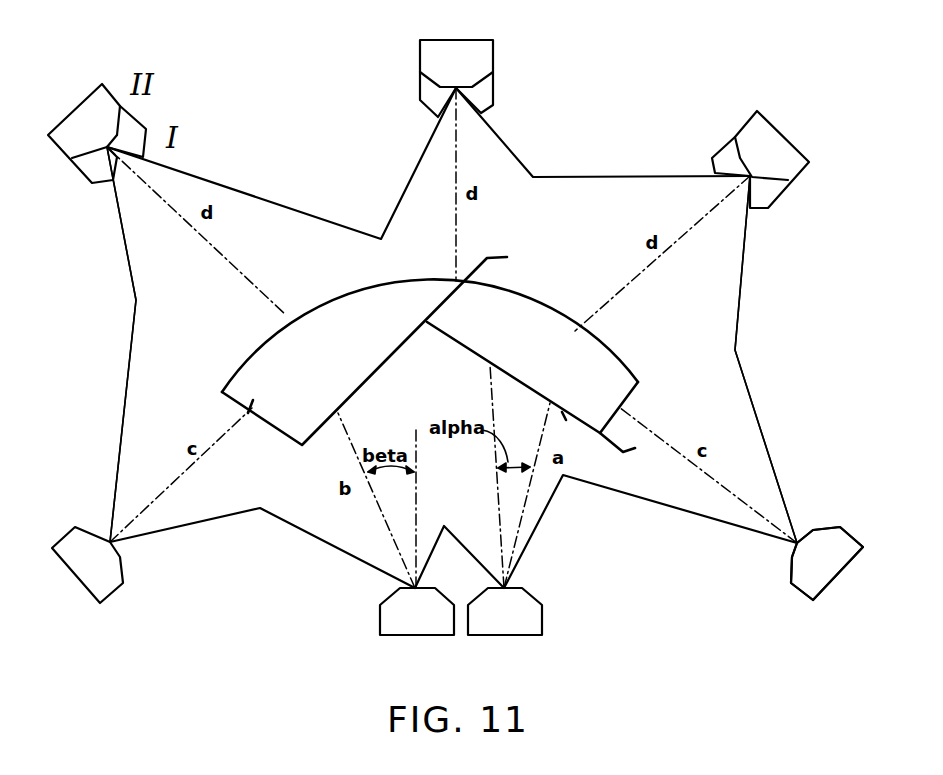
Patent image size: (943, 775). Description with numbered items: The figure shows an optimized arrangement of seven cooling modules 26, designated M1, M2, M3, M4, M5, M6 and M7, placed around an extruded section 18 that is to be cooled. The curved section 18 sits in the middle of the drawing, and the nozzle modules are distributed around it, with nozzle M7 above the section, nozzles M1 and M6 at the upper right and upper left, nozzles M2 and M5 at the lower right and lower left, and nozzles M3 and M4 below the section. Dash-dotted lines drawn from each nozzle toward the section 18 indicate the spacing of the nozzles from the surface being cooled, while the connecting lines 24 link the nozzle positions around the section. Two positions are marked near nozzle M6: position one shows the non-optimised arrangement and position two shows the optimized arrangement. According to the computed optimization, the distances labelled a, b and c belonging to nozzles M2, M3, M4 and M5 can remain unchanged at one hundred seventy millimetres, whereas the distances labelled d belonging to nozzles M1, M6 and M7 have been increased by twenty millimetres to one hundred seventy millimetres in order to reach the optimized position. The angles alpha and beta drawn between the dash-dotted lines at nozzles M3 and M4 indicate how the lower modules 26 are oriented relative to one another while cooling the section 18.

The extruded section 18 is at (625, 372).
The beam path / frame line 24 is at (146, 301).
The modules 26 is at (827, 540).
The nozzle M1 is at (766, 159).
The nozzle M2 is at (830, 563).
The nozzle M3 is at (505, 628).
The nozzle M4 is at (417, 628).
The nozzle M5 is at (82, 565).
The nozzle M6 is at (93, 133).
The nozzle M7 is at (456, 62).